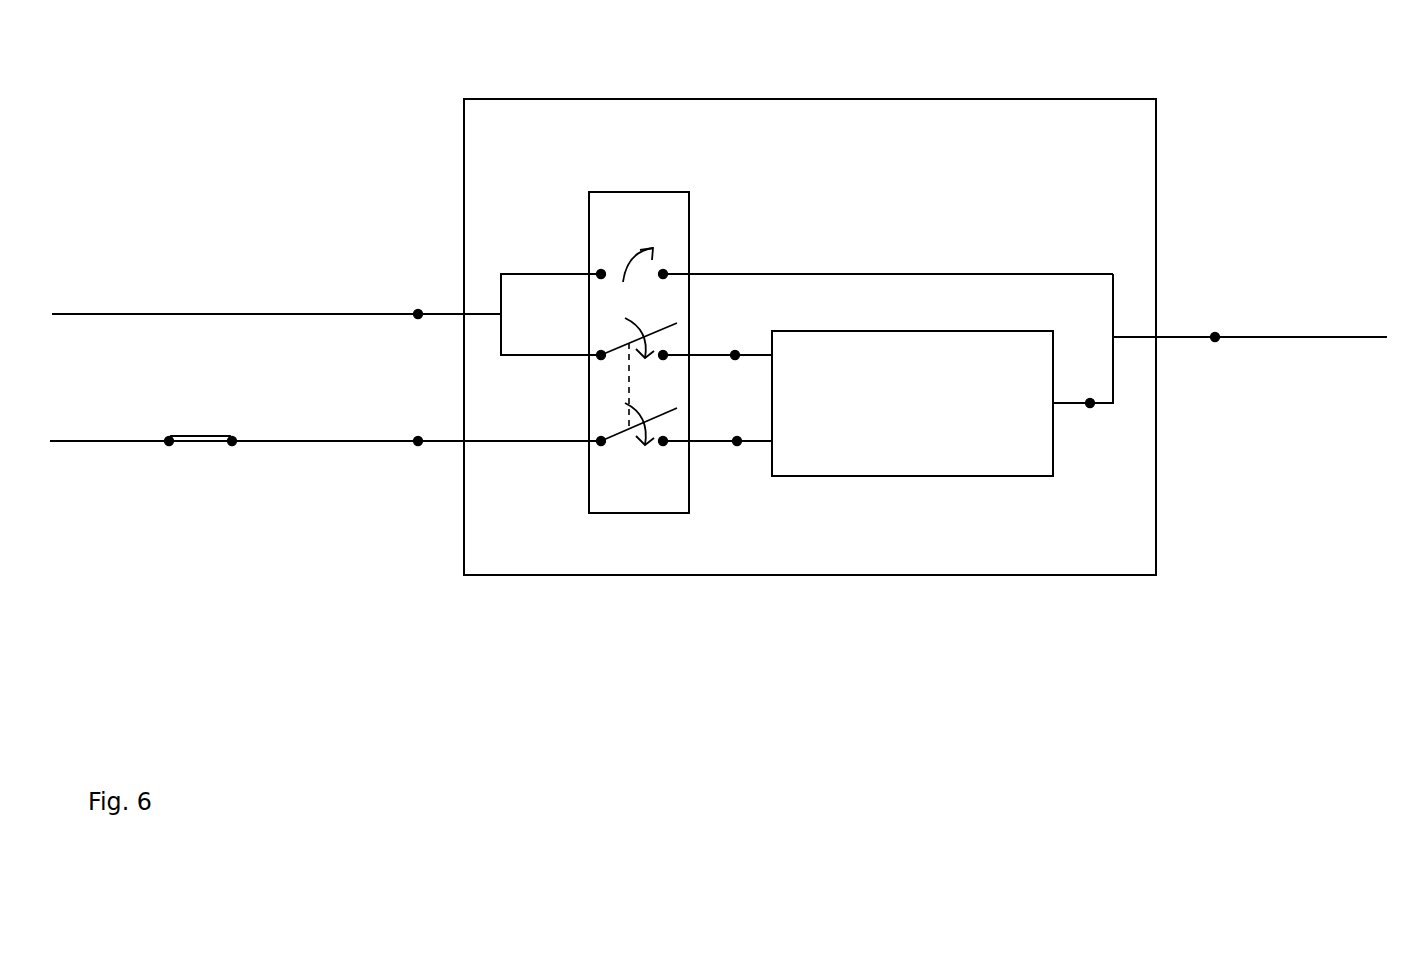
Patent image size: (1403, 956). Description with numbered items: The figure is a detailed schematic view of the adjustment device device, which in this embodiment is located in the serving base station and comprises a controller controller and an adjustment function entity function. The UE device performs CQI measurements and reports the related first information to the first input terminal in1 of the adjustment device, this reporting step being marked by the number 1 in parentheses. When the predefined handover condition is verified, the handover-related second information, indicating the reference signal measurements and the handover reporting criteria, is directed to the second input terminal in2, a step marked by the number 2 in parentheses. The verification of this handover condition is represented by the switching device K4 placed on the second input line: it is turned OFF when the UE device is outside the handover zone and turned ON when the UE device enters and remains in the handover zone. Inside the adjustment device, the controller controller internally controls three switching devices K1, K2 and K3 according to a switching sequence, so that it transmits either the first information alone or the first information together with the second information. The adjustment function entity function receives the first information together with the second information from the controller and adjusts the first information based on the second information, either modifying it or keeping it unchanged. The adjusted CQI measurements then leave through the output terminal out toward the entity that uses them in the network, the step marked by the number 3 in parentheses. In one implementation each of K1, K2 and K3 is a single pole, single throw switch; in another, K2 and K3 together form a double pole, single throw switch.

The first step 1 is at (276, 299).
The second step 2 is at (325, 463).
The third step 3 is at (1250, 321).
The first input terminal in1 is at (420, 299).
The second input terminal in2 is at (420, 425).
The output terminal out is at (1217, 322).
The first switching device K1 is at (638, 247).
The second switching device K2 is at (639, 358).
The third switching device K3 is at (639, 443).
The switching device K4 is at (201, 423).
The element controller is at (632, 192).
The adjustment function entity function is at (912, 403).
The adjustment device is at (867, 575).